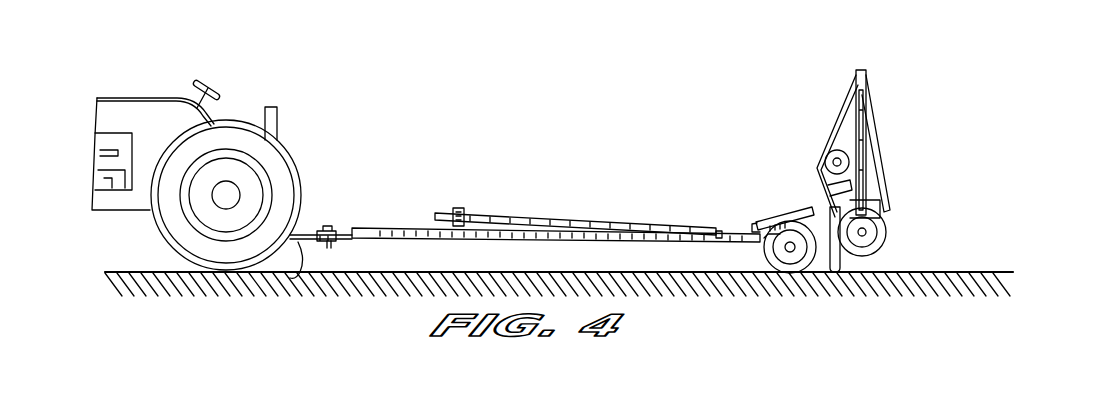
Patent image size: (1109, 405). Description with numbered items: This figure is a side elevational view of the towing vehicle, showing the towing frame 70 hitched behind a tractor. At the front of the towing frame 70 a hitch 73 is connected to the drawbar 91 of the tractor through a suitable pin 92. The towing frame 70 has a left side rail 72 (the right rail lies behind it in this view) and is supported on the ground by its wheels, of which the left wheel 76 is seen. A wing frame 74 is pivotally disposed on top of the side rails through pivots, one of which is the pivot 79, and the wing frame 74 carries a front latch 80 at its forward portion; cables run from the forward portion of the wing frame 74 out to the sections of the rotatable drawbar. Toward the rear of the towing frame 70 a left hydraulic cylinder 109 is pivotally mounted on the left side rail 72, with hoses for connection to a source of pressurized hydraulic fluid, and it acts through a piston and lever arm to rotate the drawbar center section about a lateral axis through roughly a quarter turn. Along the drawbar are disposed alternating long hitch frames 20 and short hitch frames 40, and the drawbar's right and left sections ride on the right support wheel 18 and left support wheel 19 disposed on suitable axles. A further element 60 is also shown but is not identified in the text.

The towing frame 70 is at (159, 88).
The drawbar of tractor 91 is at (292, 278).
The pin 92 is at (330, 228).
The hitch 73 is at (349, 272).
The left side rail 72 is at (532, 240).
The wing frame 74 is at (550, 207).
The front latch 80 is at (461, 207).
The pivot 79 is at (719, 229).
The left hydraulic cylinder 109 is at (790, 205).
The left wheel 76 is at (776, 270).
The left support wheel 19 is at (842, 272).
The rear wheel 60 is at (896, 208).
The long hitch frame 20 is at (868, 78).
The short hitch frame 40 is at (823, 130).
The right support wheel 18 is at (618, 0).